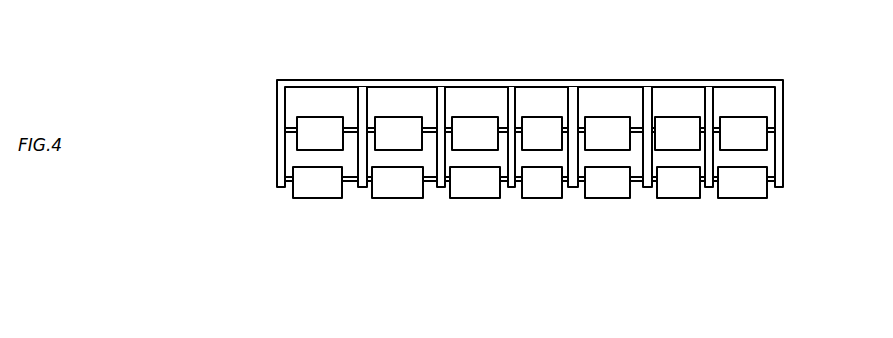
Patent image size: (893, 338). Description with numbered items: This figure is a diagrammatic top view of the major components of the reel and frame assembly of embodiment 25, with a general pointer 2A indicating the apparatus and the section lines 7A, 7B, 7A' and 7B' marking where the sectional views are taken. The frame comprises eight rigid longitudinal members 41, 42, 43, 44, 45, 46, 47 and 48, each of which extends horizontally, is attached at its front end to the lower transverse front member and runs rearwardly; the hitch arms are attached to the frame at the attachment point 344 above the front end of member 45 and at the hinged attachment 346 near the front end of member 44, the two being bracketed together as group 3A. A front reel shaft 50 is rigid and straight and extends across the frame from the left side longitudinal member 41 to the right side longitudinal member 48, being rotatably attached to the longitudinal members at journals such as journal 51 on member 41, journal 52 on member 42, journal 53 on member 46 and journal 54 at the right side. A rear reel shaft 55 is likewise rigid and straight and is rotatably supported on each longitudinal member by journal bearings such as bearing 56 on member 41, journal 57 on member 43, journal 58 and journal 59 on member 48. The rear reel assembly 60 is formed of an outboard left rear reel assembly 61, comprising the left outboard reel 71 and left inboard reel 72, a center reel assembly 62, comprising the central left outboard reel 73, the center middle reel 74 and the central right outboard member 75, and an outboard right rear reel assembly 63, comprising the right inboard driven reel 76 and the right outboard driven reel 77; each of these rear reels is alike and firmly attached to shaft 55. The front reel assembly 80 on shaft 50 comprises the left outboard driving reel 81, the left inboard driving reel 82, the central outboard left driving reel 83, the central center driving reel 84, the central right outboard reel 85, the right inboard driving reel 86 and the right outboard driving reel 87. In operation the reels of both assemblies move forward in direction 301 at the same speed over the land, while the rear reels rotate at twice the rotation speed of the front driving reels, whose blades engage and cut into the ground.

The apparatus section 2A is at (188, 208).
The center module pair 3A is at (625, 33).
The section line 7A is at (454, 21).
The section line 7B is at (658, 24).
The section line 7A' is at (454, 261).
The section line 7B' is at (657, 261).
The embodiment 25 is at (230, 74).
The leftward direction 301 is at (367, 18).
The attachment point 344 is at (574, 92).
The attachment 346 is at (510, 90).
The longitudinal member 41 is at (277, 104).
The longitudinal member 42 is at (363, 100).
The longitudinal member 43 is at (440, 117).
The longitudinal member 44 is at (512, 97).
The longitudinal member 45 is at (572, 103).
The longitudinal member 46 is at (650, 100).
The longitudinal member 47 is at (708, 100).
The longitudinal member 48 is at (782, 100).
The front reel shaft 50 is at (293, 131).
The journal 51 is at (280, 123).
The journal 52 is at (463, 104).
The journal 53 is at (643, 123).
The journal 54 is at (777, 123).
The rear reel shaft 55 is at (284, 165).
The journal bearing 56 is at (283, 179).
The journal bearing 57 is at (443, 192).
The journal bearing 58 is at (647, 192).
The journal bearing 59 is at (772, 178).
The rear reel assembly 60 is at (717, 277).
The outboard left rear reel assembly 61 is at (425, 233).
The center reel assembly 62 is at (637, 233).
The outboard right rear reel assembly 63 is at (772, 233).
The left outboard reel 71 is at (309, 184).
The left inboard reel 72 is at (389, 184).
The central left outboard reel 73 is at (467, 184).
The center middle reel 74 is at (535, 184).
The central right outboard member 75 is at (600, 184).
The right inboard driven reel 76 is at (673, 184).
The right outboard driven reel 77 is at (735, 184).
The front reel assembly 80 is at (318, 102).
The left outboard driving reel 81 is at (323, 121).
The left inboard driving reel 82 is at (397, 122).
The central outboard left driving reel 83 is at (475, 123).
The central center driving reel 84 is at (540, 128).
The central right outboard reel 85 is at (602, 123).
The right inboard driving reel 86 is at (675, 128).
The right outboard driving reel 87 is at (740, 128).